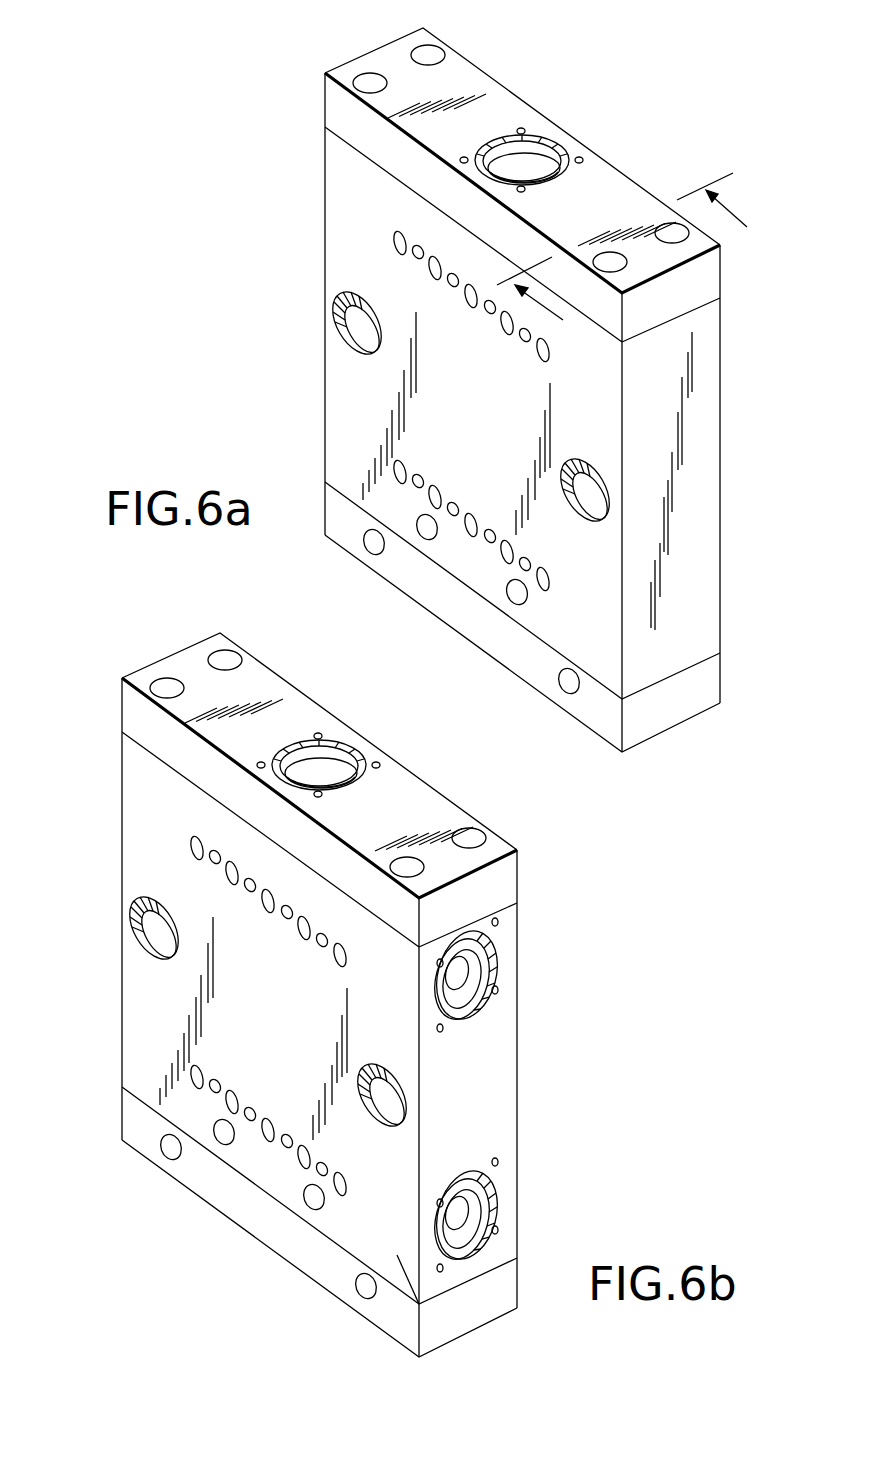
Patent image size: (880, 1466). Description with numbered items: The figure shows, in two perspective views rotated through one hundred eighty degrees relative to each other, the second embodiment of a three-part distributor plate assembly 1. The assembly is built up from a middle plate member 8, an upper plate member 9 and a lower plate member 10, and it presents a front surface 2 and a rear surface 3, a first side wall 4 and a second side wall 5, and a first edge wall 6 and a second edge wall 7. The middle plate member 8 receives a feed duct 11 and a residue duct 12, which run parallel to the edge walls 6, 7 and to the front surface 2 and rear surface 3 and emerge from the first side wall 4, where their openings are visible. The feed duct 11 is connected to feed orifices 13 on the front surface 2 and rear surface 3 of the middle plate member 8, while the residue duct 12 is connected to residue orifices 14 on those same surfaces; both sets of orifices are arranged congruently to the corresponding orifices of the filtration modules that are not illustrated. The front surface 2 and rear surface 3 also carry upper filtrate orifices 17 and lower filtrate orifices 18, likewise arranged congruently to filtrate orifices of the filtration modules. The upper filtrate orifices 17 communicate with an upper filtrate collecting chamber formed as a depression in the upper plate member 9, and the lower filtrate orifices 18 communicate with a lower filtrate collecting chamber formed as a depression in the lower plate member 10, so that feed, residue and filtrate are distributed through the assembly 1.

In FIG. 6a, the distributor plate assembly 1 is at (529, 378).
In FIG. 6a, the front surface 2 is at (340, 368).
In FIG. 6b, the front surface 2 is at (492, 1005).
In FIG. 6a, the rear surface 3 is at (687, 420).
In FIG. 6b, the rear surface 3 is at (247, 1044).
In FIG. 6a, the first side wall 4 is at (323, 270).
In FIG. 6b, the first side wall 4 is at (530, 1079).
In FIG. 6a, the second side wall 5 is at (713, 517).
In FIG. 6a, the first edge wall 6 is at (522, 138).
In FIG. 6b, the first edge wall 6 is at (319, 755).
In FIG. 6a, the second edge wall 7 is at (540, 652).
In FIG. 6b, the second edge wall 7 is at (335, 1278).
In FIG. 6a, the middle plate member 8 is at (310, 409).
In FIG. 6b, the middle plate member 8 is at (78, 909).
In FIG. 6a, the upper plate member 9 is at (522, 85).
In FIG. 6b, the upper plate member 9 is at (322, 716).
In FIG. 6a, the lower plate member 10 is at (398, 601).
In FIG. 6b, the lower plate member 10 is at (306, 1222).
In FIG. 6b, the feed duct 11 is at (500, 1215).
In FIG. 6b, the residue duct 12 is at (500, 975).
In FIG. 6b, the feed orifices 13 is at (205, 1122).
In FIG. 6b, the residue orifices 14 is at (205, 901).
In FIG. 6a, the upper filtrate orifices 17 is at (525, 327).
In FIG. 6a, the lower filtrate orifices 18 is at (418, 490).